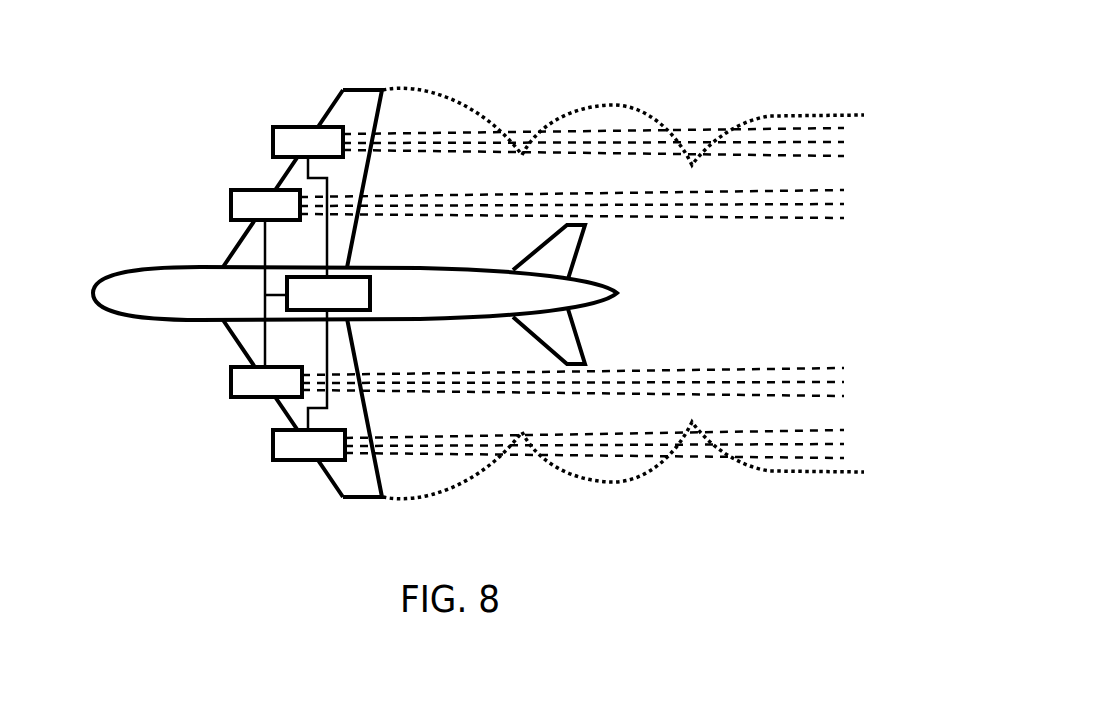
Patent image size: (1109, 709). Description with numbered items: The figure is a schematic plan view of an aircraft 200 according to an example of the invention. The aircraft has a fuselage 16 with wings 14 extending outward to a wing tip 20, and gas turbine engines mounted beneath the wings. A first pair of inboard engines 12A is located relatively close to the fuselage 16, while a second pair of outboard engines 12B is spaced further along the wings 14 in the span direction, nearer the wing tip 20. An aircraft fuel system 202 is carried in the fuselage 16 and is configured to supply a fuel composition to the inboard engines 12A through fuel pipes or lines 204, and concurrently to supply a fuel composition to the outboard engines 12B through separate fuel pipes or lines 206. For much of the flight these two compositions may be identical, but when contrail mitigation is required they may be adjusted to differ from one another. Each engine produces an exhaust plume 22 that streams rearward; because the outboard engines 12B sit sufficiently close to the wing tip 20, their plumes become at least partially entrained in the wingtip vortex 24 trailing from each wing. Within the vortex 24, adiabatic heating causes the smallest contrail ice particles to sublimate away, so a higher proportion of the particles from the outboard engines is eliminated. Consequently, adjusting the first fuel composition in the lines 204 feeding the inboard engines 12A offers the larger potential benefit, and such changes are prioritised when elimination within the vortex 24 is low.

The aircraft 200 is at (147, 106).
The wing tip 20 is at (368, 88).
The wingtip vortex 24 is at (417, 90).
The exhaust plume 22 is at (455, 140).
The outboard engines 12B is at (273, 137).
The inboard engines 12A is at (231, 205).
The wing 14 is at (234, 250).
The fuselage 16 is at (120, 317).
The aircraft fuel system 202 is at (372, 298).
The fuel pipes/lines 204 is at (263, 338).
The fuel pipes/lines 206 is at (306, 413).